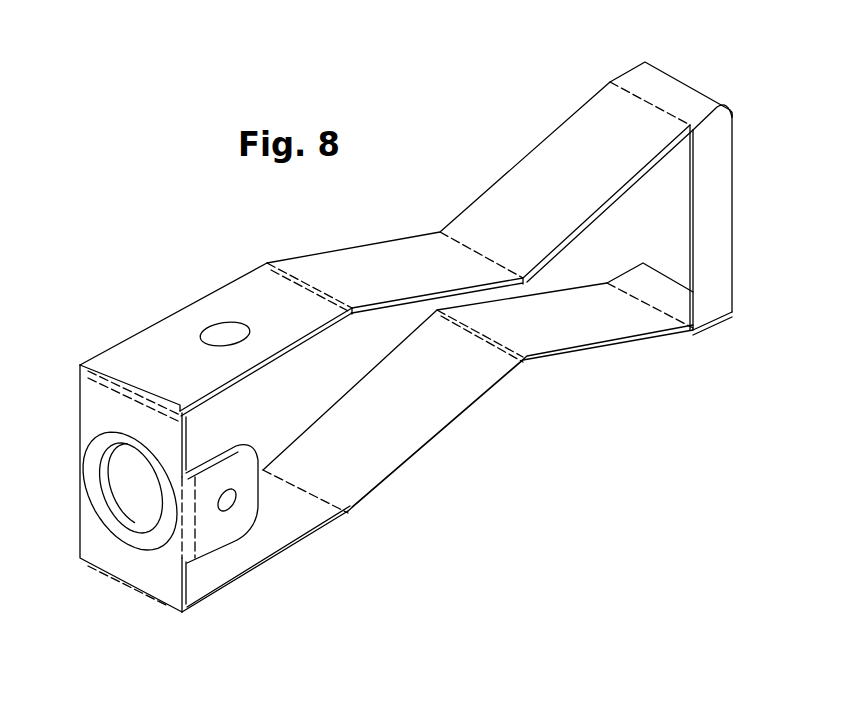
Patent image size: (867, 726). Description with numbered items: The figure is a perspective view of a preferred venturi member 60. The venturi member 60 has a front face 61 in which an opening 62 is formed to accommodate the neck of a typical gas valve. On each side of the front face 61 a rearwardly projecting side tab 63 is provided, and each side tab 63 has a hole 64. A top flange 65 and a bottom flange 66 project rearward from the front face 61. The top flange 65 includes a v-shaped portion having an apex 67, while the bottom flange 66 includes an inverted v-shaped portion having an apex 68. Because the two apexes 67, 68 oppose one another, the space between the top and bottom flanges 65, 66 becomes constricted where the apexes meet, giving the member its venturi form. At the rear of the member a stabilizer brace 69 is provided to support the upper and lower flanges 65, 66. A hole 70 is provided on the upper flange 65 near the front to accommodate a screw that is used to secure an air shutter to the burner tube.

The venturi member 60 is at (580, 88).
The front face 61 is at (162, 580).
The opening 62 is at (137, 520).
The side tab 63 is at (122, 480).
The hole 64 is at (127, 465).
The top flange 65 is at (150, 337).
The bottom flange 66 is at (323, 530).
The apex 67 is at (440, 232).
The apex 68 is at (523, 362).
The stabilizer brace 69 is at (723, 203).
The hole 70 is at (222, 323).